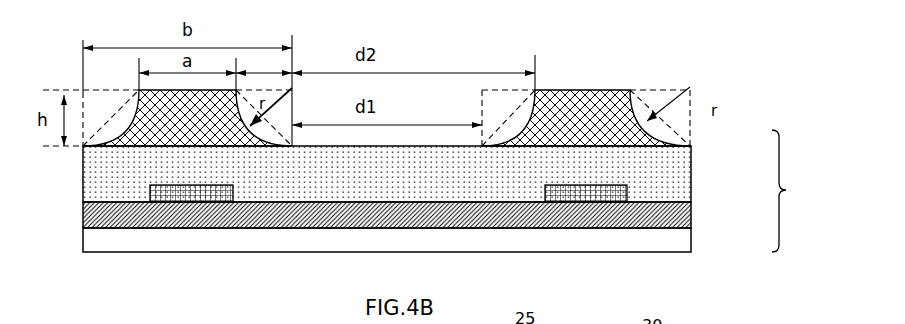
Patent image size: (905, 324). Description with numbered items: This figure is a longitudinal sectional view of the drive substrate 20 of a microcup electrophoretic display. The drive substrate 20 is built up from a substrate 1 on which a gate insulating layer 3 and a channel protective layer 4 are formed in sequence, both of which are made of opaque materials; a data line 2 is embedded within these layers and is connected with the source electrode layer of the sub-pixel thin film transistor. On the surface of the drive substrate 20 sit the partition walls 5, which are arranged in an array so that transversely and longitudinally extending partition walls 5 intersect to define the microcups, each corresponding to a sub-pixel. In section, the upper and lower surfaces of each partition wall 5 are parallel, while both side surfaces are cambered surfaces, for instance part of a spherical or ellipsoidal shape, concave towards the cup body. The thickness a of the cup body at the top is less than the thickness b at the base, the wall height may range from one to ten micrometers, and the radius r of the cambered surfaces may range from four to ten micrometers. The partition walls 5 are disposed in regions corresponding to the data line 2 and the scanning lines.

The substrate 1 is at (693, 242).
The data line 2 is at (627, 192).
The gate insulating layer 3 is at (693, 210).
The channel protective layer 4 is at (677, 158).
The partition wall 5 is at (587, 108).
The drive substrate 20 is at (791, 191).